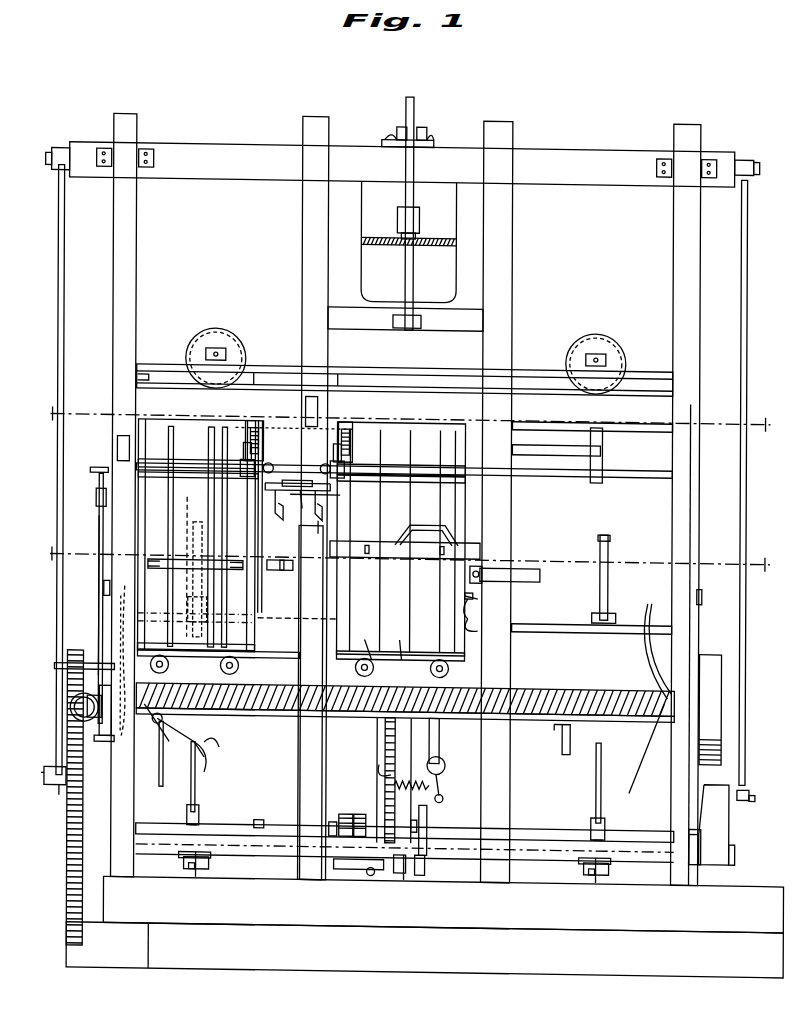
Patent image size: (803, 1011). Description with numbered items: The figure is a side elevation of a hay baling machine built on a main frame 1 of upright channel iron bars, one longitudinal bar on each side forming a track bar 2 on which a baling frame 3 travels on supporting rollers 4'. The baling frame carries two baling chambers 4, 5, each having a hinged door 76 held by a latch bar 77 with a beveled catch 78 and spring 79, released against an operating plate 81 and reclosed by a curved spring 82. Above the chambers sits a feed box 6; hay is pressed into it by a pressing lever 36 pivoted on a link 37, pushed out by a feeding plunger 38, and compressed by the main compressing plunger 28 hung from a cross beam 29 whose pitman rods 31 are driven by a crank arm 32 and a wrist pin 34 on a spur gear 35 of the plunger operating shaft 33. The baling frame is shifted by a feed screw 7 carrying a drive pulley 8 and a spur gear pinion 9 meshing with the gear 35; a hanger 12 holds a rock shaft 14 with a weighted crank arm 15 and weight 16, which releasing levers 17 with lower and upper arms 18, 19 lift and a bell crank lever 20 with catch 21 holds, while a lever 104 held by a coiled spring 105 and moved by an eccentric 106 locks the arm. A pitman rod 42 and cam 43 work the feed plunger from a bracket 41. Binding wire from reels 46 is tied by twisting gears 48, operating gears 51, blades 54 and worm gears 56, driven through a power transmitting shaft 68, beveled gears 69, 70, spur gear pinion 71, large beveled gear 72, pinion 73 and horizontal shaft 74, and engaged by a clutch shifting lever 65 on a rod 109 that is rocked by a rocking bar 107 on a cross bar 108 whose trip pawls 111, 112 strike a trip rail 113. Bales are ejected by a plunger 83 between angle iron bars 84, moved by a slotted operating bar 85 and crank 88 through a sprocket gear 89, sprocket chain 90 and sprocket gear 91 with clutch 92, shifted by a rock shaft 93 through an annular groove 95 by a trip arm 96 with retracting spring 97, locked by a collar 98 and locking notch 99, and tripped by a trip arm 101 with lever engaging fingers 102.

The main frame 1 is at (136, 258).
The track bar 2 is at (278, 715).
The baling frame 3 is at (270, 656).
The baling chamber 4 is at (400, 550).
The supporting rollers 4' is at (405, 688).
The baling chamber 5 is at (404, 550).
The feed box 6 is at (452, 362).
The feed screw or shaft 7 is at (538, 720).
The drive pulley 8 is at (705, 650).
The spur gear pinion 9 is at (55, 672).
The hanger or bracket 12 is at (155, 728).
The rock shaft 14 is at (160, 770).
The crank arm 15 is at (260, 482).
The weight 16 is at (218, 748).
The releasing lever 17 is at (120, 628).
The lower arm 18 is at (206, 770).
The upper arm 19 is at (120, 605).
The bell crank lever 20 is at (402, 660).
The catch 21 is at (180, 741).
The main compressing plunger 28 is at (409, 241).
The cross beam 29 is at (230, 150).
The pitman rod 31 is at (63, 372).
The crank arm 32 is at (732, 818).
The plunger operating shaft 33 is at (258, 820).
The wrist pin 34 is at (48, 792).
The spur gear 35 is at (68, 858).
The pressing lever 36 is at (414, 112).
The link 37 is at (400, 255).
The feeding plunger 38 is at (405, 380).
The supporting arm or bracket 41 is at (205, 878).
The pitman rod 42 is at (430, 812).
The cam or eccentric 43 is at (420, 880).
The reels or spools of wire 46 is at (240, 366).
The twisting gear 48 is at (252, 425).
The operating gear 51 is at (244, 452).
The wire severing and holding blade 54 is at (330, 395).
The worm gear 56 is at (318, 424).
The bell crank clutch shifting lever 65 is at (270, 492).
The power transmitting shaft 68 is at (100, 532).
The beveled gear 69 is at (112, 740).
The beveled gear 70 is at (92, 724).
The spur gear pinion 71 is at (72, 718).
The large beveled gear 72 is at (96, 474).
The beveled gear pinion 73 is at (116, 450).
The horizontal shaft 74 is at (165, 463).
The hinged door 76 is at (298, 568).
The latch bar 77 is at (478, 597).
The beveled catch 78 is at (478, 628).
The spring 79 is at (470, 608).
The operating plate 81 is at (104, 590).
The curved spring 82 is at (286, 574).
The plunger 83 is at (190, 548).
The angle iron bar 84 is at (300, 620).
The slotted operating bar 85 is at (600, 645).
The crank 88 is at (566, 752).
The sprocket gear 89 is at (370, 638).
The sprocket chain 90 is at (386, 750).
The sprocket gear 91 is at (400, 875).
The clutch 92 is at (332, 822).
The rock shaft 93 is at (372, 878).
The annular groove 95 is at (355, 870).
The trip arm 96 is at (380, 768).
The retracting spring 97 is at (446, 798).
The collar 98 is at (420, 826).
The locking notch 99 is at (428, 865).
The trip arm 101 is at (378, 733).
The lever engaging fingers 102 is at (395, 785).
The lever 104 is at (200, 790).
The coiled spring 105 is at (188, 815).
The eccentric 106 is at (200, 818).
The rocking bar 107 is at (293, 478).
The cross bar 108 is at (380, 470).
The rod or shaft 109 is at (345, 498).
The trip pawl 111 is at (265, 522).
The trip pawl 112 is at (312, 526).
The trip rail 113 is at (425, 525).